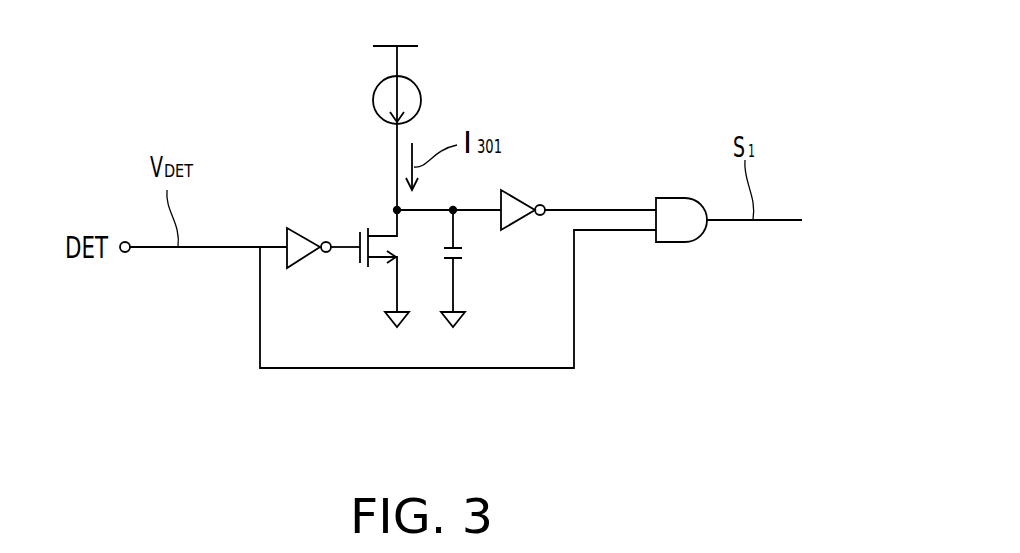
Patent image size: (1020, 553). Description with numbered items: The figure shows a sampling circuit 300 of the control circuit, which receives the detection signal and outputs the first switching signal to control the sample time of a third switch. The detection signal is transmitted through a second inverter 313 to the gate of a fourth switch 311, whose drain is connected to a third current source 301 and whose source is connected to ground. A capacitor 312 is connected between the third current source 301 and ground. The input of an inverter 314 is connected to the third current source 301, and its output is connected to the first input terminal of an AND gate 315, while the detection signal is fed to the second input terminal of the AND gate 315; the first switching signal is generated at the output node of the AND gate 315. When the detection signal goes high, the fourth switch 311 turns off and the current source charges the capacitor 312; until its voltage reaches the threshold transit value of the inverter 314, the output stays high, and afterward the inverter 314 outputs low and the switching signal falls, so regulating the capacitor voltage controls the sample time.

The sampling circuit 300 is at (824, 47).
The third current source 301 is at (421, 100).
The fourth switch 311 is at (370, 268).
The capacitor 312 is at (478, 268).
The second inverter 313 is at (317, 225).
The inverter 314 is at (578, 192).
The AND gate 315 is at (729, 199).